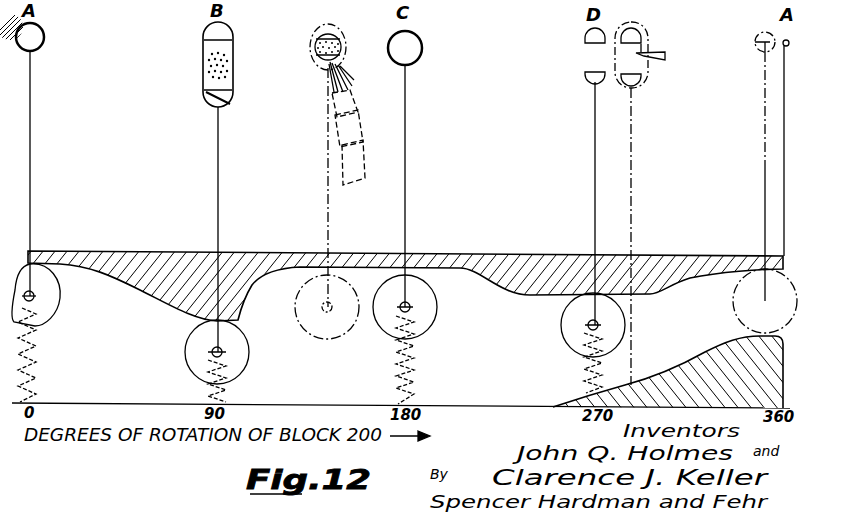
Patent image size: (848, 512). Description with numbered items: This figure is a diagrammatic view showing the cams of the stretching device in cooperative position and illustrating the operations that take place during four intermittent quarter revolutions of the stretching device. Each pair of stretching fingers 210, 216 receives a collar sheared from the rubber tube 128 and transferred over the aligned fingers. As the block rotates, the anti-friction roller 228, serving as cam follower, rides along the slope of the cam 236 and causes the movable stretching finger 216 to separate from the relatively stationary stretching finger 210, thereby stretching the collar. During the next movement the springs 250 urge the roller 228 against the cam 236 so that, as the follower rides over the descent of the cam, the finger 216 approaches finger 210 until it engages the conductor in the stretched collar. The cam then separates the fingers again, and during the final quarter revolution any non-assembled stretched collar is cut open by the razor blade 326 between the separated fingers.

The rubber tube 128 is at (204, 72).
The stretching finger 210 is at (233, 33).
The stretching finger 216 is at (226, 98).
The anti-friction roller 228 is at (57, 303).
The cam 236 is at (424, 324).
The springs 250 is at (38, 345).
The razor blade 326 is at (660, 52).